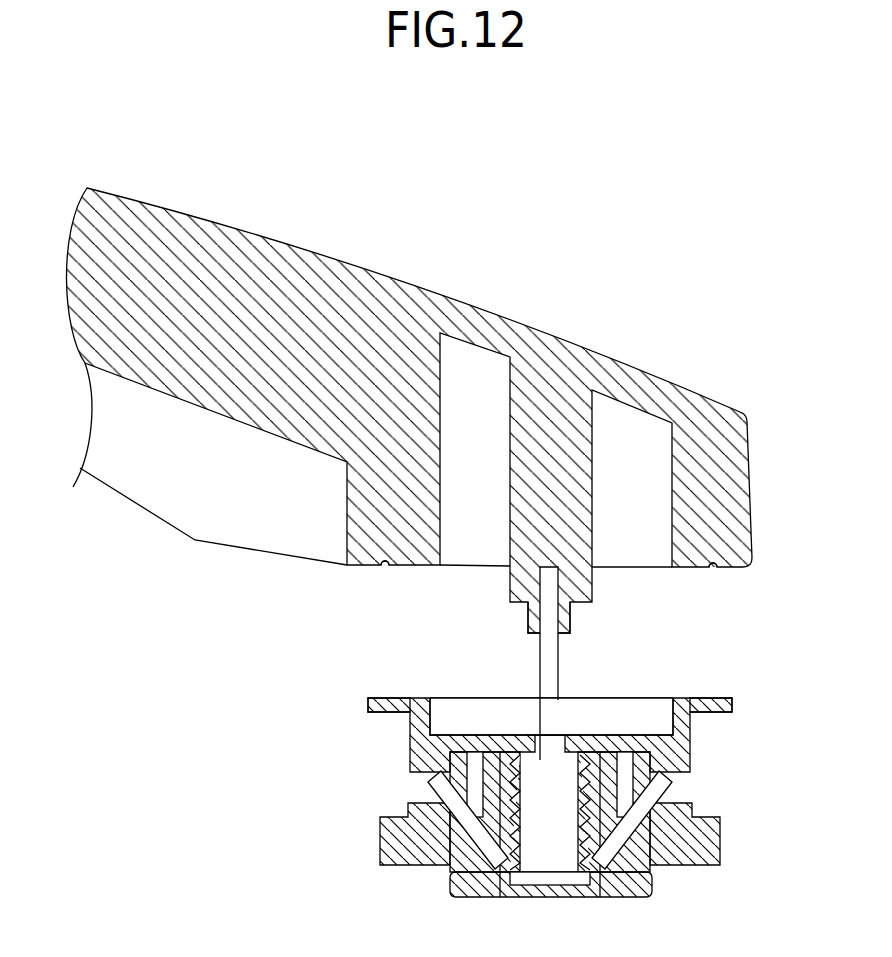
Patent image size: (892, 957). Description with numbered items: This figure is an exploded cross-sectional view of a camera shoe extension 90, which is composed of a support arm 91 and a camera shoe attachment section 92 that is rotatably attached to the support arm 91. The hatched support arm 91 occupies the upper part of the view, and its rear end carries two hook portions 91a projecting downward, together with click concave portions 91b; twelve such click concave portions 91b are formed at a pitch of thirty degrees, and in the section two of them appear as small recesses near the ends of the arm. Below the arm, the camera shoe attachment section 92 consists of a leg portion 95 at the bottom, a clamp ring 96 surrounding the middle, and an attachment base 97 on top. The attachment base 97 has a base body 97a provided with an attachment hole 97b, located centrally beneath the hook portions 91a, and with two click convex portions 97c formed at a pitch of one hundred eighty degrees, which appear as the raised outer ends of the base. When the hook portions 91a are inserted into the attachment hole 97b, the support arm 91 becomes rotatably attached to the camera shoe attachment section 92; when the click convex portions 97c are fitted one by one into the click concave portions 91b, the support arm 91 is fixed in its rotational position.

The camera shoe extension 90 is at (446, 478).
The support arm 91 is at (383, 307).
The hook portions 91a is at (532, 625).
The click concave portions 91b is at (385, 570).
The camera shoe attachment section 92 is at (505, 764).
The leg portion 95 is at (640, 883).
The clamp ring 96 is at (700, 837).
The attachment base 97 is at (578, 697).
The base body 97a is at (676, 708).
The attachment hole 97b is at (553, 745).
The click convex portions 97c is at (385, 696).